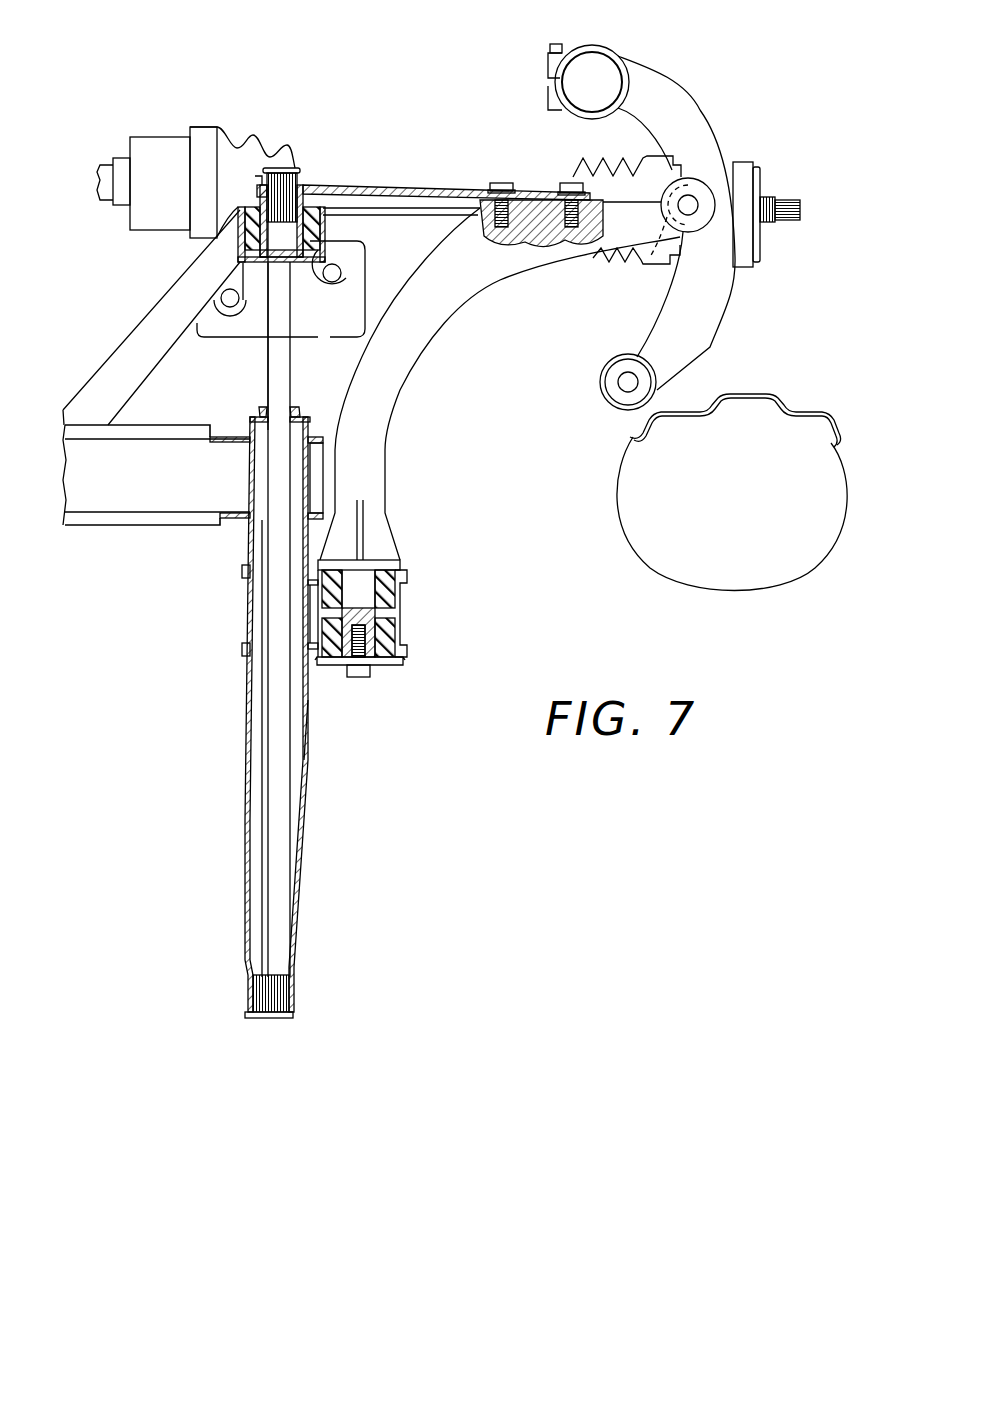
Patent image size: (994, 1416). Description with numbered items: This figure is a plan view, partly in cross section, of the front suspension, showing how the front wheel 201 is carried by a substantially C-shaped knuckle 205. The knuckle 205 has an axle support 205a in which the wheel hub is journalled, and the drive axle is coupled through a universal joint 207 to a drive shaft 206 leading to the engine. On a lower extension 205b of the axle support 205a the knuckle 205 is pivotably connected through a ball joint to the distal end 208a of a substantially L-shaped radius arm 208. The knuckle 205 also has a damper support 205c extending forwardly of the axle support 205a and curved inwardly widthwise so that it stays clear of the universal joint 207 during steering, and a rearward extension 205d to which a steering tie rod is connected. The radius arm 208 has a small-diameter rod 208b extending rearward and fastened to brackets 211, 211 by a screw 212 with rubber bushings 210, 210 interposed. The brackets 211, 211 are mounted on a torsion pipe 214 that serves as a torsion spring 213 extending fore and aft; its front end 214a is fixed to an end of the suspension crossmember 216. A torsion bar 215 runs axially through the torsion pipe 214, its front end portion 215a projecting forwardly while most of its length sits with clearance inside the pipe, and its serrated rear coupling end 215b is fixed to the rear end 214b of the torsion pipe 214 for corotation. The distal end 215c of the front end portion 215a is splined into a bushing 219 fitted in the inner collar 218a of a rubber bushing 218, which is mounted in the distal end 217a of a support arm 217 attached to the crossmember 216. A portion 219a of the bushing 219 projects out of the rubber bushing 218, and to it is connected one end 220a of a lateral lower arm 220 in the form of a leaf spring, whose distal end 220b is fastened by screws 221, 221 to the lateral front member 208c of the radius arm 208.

The front wheel 201 is at (642, 545).
The knuckle 205 is at (730, 323).
The axle support 205a is at (743, 235).
The lower extension 205b is at (677, 225).
The damper support 205c is at (615, 58).
The rearward extension 205d is at (622, 396).
The drive shaft 206 is at (430, 216).
The universal joint 207 is at (627, 140).
The radius arm 208 is at (448, 292).
The distal end 208a is at (700, 190).
The small-diameter rod 208b is at (395, 600).
The lateral front member 208c is at (547, 232).
The rubber bushings 210 is at (405, 572).
The brackets 211 is at (247, 650).
The screw 212 is at (358, 677).
The torsion spring 213 is at (313, 765).
The torsion pipe 214 is at (305, 832).
The front end 214a is at (305, 478).
The rear end 214b is at (250, 1000).
The torsion bar 215 is at (288, 390).
The front end portion 215a is at (266, 353).
The rear coupling end 215b is at (283, 1000).
The distal end 215c is at (292, 168).
The suspension crossmember 216 is at (152, 520).
The support arm 217 is at (130, 360).
The distal end 217a is at (242, 253).
The rubber bushing 218 is at (240, 243).
The inner collar 218a is at (273, 203).
The bushing 219 is at (338, 186).
The portion 219a is at (302, 184).
The lateral lower arm 220 is at (403, 187).
The one end 220a is at (258, 188).
The distal end 220b is at (552, 202).
The screws 221 is at (500, 183).